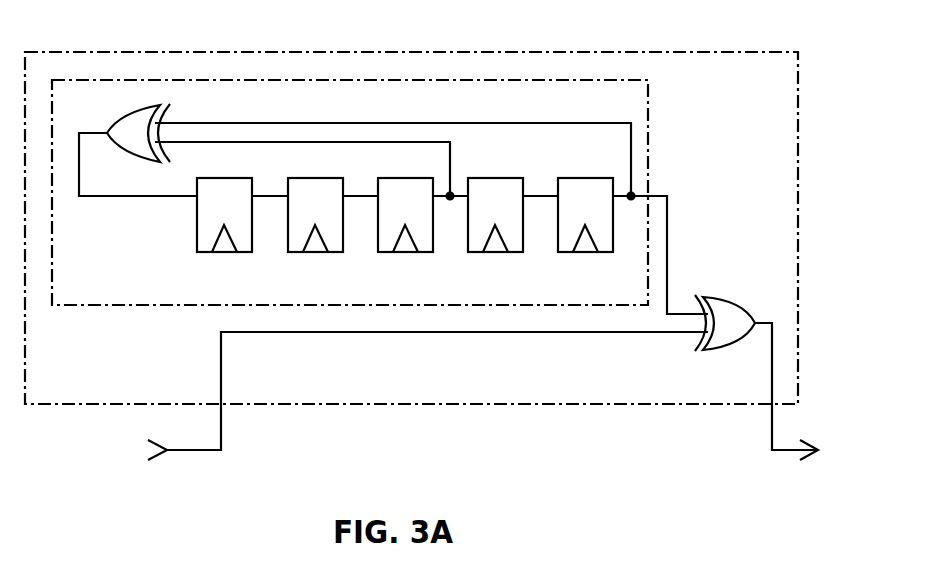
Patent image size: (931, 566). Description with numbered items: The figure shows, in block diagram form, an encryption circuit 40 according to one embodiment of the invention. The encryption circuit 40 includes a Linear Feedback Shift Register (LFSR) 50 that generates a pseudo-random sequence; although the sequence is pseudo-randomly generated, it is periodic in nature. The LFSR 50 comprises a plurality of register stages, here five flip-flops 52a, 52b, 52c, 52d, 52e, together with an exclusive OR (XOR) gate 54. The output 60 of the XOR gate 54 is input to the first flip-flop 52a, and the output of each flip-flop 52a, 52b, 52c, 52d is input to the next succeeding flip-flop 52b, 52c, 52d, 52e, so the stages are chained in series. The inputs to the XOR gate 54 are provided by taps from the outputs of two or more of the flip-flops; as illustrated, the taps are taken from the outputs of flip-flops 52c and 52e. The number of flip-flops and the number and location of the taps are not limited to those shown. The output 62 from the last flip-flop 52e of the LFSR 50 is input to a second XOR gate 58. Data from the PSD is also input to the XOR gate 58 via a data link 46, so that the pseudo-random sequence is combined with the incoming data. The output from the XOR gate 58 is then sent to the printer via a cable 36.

The encryption circuit 40 is at (472, 52).
The Linear Feedback Shift Register (LFSR) 50 is at (650, 140).
The exclusive OR (XOR) gate 54 is at (124, 118).
The output of XOR gate 60 is at (158, 200).
The flip-flop 52a is at (195, 235).
The flip-flop 52b is at (286, 235).
The flip-flop 52c is at (376, 235).
The flip-flop 52d is at (466, 235).
The flip-flop 52e is at (556, 235).
The output from last flip-flop 62 is at (667, 247).
The XOR gate 58 is at (713, 297).
The cable 36 is at (772, 362).
The data link 46 is at (221, 378).